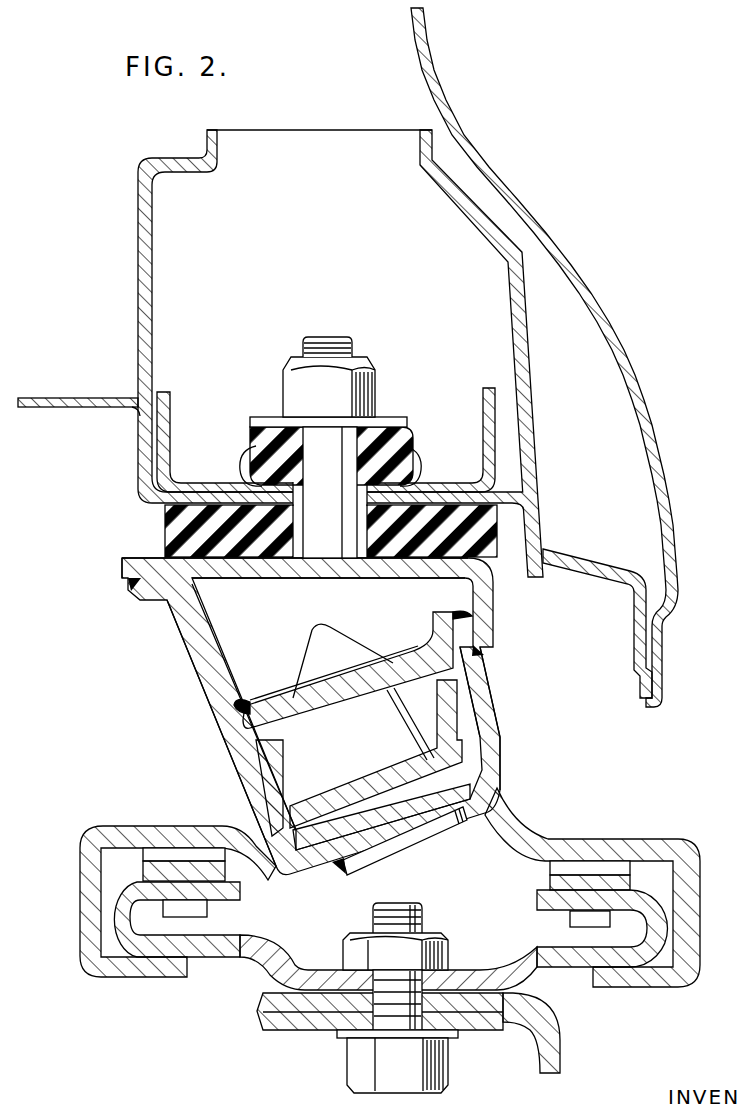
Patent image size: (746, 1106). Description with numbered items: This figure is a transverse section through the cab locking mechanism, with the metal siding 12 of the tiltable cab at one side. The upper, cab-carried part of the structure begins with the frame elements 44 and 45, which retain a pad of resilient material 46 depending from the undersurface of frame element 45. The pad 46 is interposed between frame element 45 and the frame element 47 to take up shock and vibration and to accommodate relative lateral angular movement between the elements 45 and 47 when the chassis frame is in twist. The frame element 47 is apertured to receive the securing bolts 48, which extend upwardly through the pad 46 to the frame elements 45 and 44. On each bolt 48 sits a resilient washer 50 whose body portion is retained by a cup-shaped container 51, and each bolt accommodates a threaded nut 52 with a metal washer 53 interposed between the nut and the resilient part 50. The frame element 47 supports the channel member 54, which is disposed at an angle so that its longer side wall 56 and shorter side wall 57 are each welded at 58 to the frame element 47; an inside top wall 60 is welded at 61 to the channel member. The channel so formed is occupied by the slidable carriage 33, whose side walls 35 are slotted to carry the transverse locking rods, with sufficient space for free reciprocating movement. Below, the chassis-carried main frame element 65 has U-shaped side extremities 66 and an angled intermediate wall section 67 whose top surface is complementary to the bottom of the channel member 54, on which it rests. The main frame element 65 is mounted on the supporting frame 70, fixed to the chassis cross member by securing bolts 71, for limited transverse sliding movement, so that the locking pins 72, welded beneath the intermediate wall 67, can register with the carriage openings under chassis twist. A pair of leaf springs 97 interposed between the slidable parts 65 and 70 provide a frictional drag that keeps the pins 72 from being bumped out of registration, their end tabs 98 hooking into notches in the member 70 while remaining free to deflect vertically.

The metal siding 12 is at (569, 258).
The slidable carriage 33 is at (470, 716).
The side walls 35 is at (282, 800).
The frame element 44 is at (172, 420).
The frame element 45 is at (143, 224).
The pad of resilient material 46 is at (210, 525).
The frame element 47 is at (424, 568).
The securing bolts 48 is at (347, 453).
The washer of resilient material 50 is at (405, 445).
The cup-shaped container 51 is at (247, 457).
The threaded nut 52 is at (333, 392).
The metal washer 53 is at (270, 418).
The channel member 54 is at (213, 744).
The side wall 56 is at (200, 667).
The side wall 57 is at (490, 693).
The weld 58 is at (132, 585).
The inside top wall 60 is at (418, 667).
The weld 61 is at (236, 697).
The main frame element 65 is at (605, 826).
The U-shaped side extremities 66 is at (82, 900).
The intermediate wall section 67 is at (437, 828).
The supporting frame 70 is at (220, 964).
The securing bolts 71 is at (387, 1020).
The locking pins 72 is at (425, 740).
The leaf springs 97 is at (136, 822).
The end tabs 98 is at (207, 912).